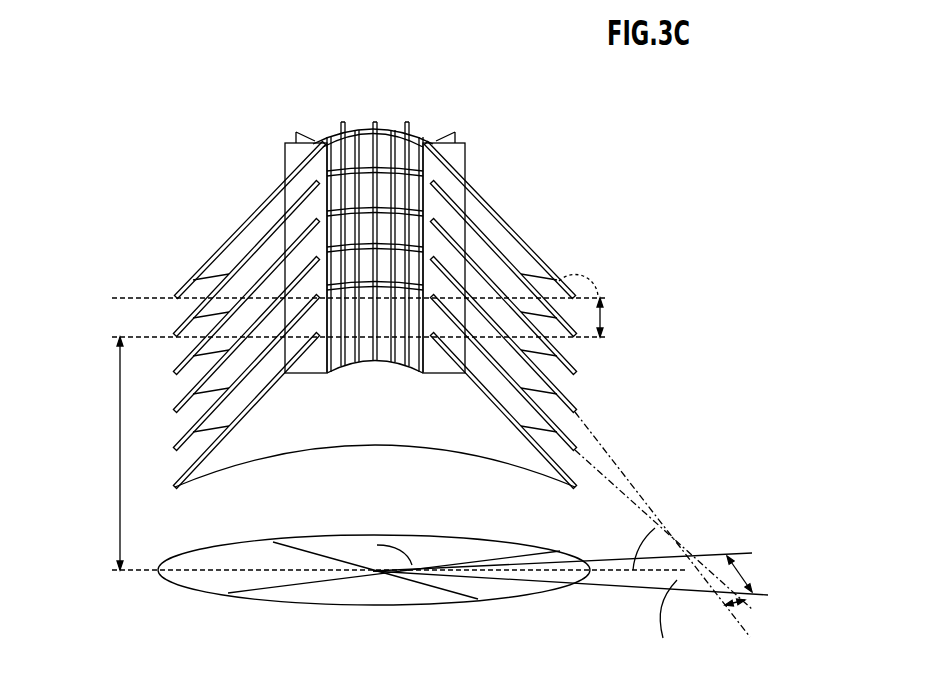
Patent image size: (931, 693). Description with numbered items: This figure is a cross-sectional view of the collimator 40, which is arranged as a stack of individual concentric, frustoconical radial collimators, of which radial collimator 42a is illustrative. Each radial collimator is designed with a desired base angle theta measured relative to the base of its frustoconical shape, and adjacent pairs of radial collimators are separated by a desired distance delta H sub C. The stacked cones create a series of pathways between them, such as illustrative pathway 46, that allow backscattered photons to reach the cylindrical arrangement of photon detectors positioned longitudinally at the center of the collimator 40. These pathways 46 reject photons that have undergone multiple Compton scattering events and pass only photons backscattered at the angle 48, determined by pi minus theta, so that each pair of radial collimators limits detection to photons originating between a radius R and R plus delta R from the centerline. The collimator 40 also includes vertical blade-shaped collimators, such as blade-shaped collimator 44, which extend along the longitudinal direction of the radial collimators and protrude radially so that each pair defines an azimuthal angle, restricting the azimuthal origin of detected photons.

The collimator 40 is at (120, 155).
The radial collimator 42a is at (210, 278).
The blade-shaped collimator 44 is at (465, 158).
The pathway 46 is at (518, 262).
The angle 48 is at (628, 264).